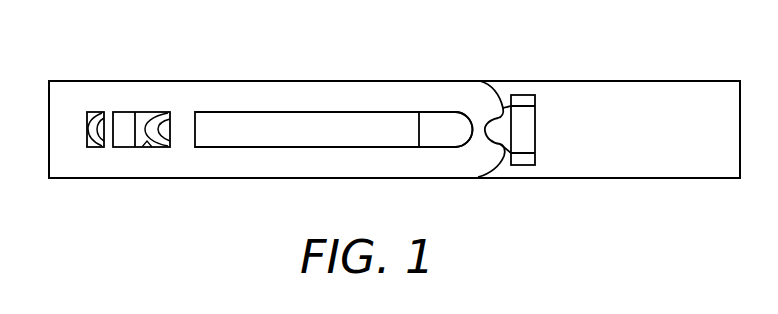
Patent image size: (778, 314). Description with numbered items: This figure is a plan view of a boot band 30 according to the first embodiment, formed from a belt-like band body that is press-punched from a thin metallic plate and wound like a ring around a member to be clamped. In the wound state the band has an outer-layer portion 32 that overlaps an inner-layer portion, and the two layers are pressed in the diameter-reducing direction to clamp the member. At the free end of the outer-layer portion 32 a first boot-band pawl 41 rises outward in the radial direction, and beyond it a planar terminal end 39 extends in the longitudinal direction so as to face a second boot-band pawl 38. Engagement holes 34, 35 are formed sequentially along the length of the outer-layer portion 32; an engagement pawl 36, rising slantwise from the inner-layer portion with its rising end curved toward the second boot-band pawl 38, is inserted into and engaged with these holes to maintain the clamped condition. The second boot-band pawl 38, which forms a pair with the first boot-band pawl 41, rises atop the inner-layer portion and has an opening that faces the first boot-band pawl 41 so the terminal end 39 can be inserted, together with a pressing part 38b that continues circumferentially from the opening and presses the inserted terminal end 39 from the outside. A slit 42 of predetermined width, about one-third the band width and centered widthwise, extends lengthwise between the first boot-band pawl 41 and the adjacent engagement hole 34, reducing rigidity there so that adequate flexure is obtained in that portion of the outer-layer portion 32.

The boot band 30 is at (666, 75).
The outer-layer portion 32 is at (260, 97).
The engagement hole 34 is at (146, 143).
The engagement hole 35 is at (89, 112).
The engagement pawl 36 is at (157, 118).
The second boot-band pawl 38 is at (537, 117).
The pressing part 38b is at (496, 116).
The terminal end 39 is at (485, 158).
The first boot-band pawl 41 is at (449, 134).
The slit 42 is at (322, 113).